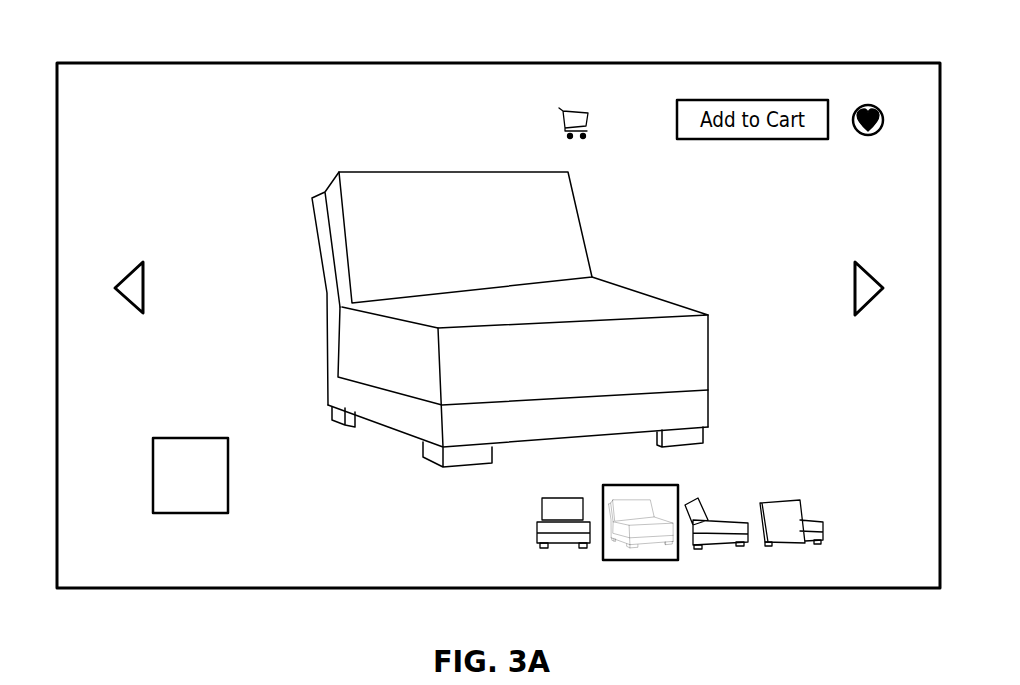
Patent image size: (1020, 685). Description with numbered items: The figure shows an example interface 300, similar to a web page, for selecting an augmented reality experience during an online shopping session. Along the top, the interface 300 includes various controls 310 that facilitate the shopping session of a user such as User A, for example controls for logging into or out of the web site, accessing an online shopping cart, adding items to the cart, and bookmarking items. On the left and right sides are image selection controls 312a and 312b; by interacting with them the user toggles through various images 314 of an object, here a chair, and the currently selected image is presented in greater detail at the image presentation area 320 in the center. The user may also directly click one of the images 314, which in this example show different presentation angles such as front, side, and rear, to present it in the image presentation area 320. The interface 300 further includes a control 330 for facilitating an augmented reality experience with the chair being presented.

The interface 300 is at (97, 62).
The controls 310 is at (433, 88).
The image selection control 312a is at (147, 278).
The image selection control 312b is at (855, 280).
The images 314 is at (517, 487).
The image presentation area 320 is at (290, 192).
The control 330 is at (170, 438).